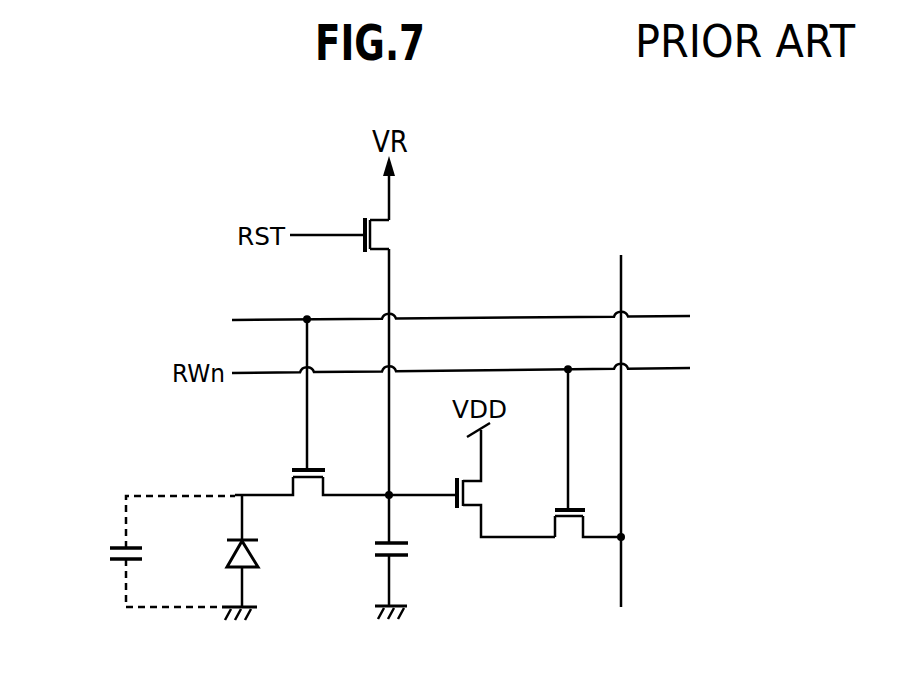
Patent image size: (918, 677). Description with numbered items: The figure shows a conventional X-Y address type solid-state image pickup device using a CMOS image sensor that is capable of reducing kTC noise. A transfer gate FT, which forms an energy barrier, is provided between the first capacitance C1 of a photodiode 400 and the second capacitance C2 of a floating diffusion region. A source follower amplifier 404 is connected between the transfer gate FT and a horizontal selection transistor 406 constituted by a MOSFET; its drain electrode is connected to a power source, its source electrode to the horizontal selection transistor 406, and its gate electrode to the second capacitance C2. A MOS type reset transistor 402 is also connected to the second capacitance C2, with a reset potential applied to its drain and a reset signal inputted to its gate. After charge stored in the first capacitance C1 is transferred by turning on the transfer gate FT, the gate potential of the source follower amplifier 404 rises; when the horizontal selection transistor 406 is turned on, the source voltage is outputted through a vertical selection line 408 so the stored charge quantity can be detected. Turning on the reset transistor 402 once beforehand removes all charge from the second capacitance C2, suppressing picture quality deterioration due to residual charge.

The photodiode 400 is at (228, 552).
The reset transistor 402 is at (380, 237).
The source follower amplifier 404 is at (476, 494).
The horizontal selection transistor 406 is at (570, 524).
The vertical selection line 408 is at (622, 279).
The first capacitance C1 is at (110, 555).
The second capacitance C2 is at (410, 552).
The transfer gate FT is at (308, 486).